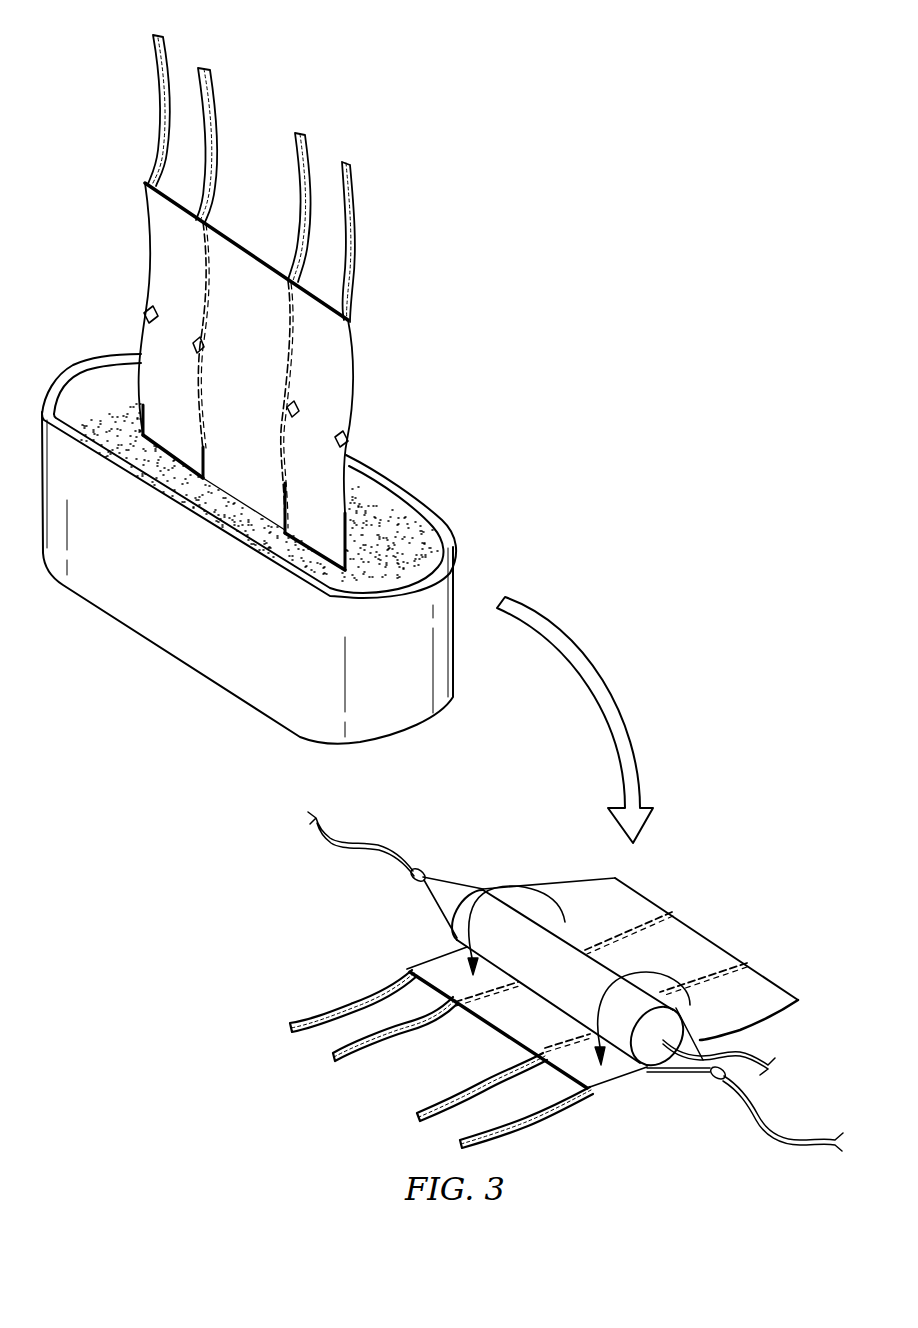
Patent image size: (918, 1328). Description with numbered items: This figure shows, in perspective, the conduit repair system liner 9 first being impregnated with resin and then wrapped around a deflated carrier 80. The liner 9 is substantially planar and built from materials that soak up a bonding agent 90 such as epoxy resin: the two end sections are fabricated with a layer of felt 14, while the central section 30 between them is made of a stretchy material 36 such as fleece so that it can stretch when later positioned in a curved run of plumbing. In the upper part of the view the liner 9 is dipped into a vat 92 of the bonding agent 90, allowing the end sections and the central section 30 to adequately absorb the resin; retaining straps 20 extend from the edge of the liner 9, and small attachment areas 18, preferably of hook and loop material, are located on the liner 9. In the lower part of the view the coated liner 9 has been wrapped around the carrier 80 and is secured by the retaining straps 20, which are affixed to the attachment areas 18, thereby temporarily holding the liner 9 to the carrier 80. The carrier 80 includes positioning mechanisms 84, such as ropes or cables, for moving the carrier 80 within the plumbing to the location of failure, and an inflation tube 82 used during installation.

The conduit repair system liner 9 is at (410, 402).
The layer of felt 14 is at (194, 300).
The attachment area 18 is at (140, 318).
The retaining strap 20 is at (163, 36).
The central section 30 is at (259, 222).
The layer of stretchy material 36 is at (260, 319).
The carrier 80 is at (574, 982).
The inflation tube 82 is at (740, 1052).
The positioning mechanism 84 is at (378, 846).
The bonding agent 90 is at (385, 556).
The vat 92 is at (394, 676).